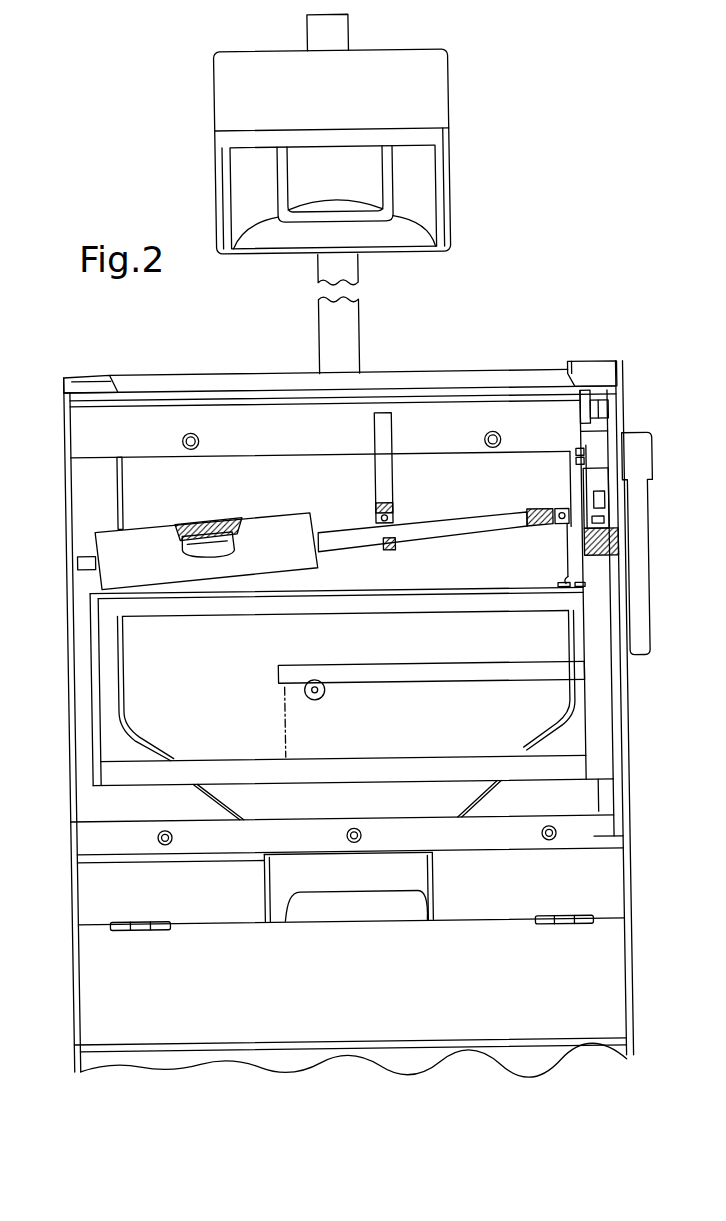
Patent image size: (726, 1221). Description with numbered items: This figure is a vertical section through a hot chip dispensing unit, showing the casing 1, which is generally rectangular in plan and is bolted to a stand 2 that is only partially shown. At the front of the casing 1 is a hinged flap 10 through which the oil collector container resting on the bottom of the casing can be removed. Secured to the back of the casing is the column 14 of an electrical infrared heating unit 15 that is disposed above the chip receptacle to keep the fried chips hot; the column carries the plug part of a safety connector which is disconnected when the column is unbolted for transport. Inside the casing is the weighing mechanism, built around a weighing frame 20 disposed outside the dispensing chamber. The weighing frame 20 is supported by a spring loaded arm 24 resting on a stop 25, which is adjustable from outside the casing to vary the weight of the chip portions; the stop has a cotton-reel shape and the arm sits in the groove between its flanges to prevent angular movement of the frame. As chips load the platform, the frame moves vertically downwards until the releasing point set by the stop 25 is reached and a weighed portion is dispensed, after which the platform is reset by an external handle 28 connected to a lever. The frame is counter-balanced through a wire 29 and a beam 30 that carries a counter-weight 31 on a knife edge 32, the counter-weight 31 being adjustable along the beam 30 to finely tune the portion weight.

The casing 1 is at (62, 598).
The stand 2 is at (608, 1058).
The hinged flap 10 is at (352, 999).
The column 14 is at (353, 332).
The heating unit 15 is at (461, 192).
The weighing frame 20 is at (145, 598).
The spring loaded arm 24 is at (443, 680).
The stop 25 is at (317, 702).
The external handle 28 is at (634, 631).
The wire 29 is at (571, 555).
The beam 30 is at (469, 528).
The counter-weight 31 is at (110, 549).
The knife edge 32 is at (387, 552).